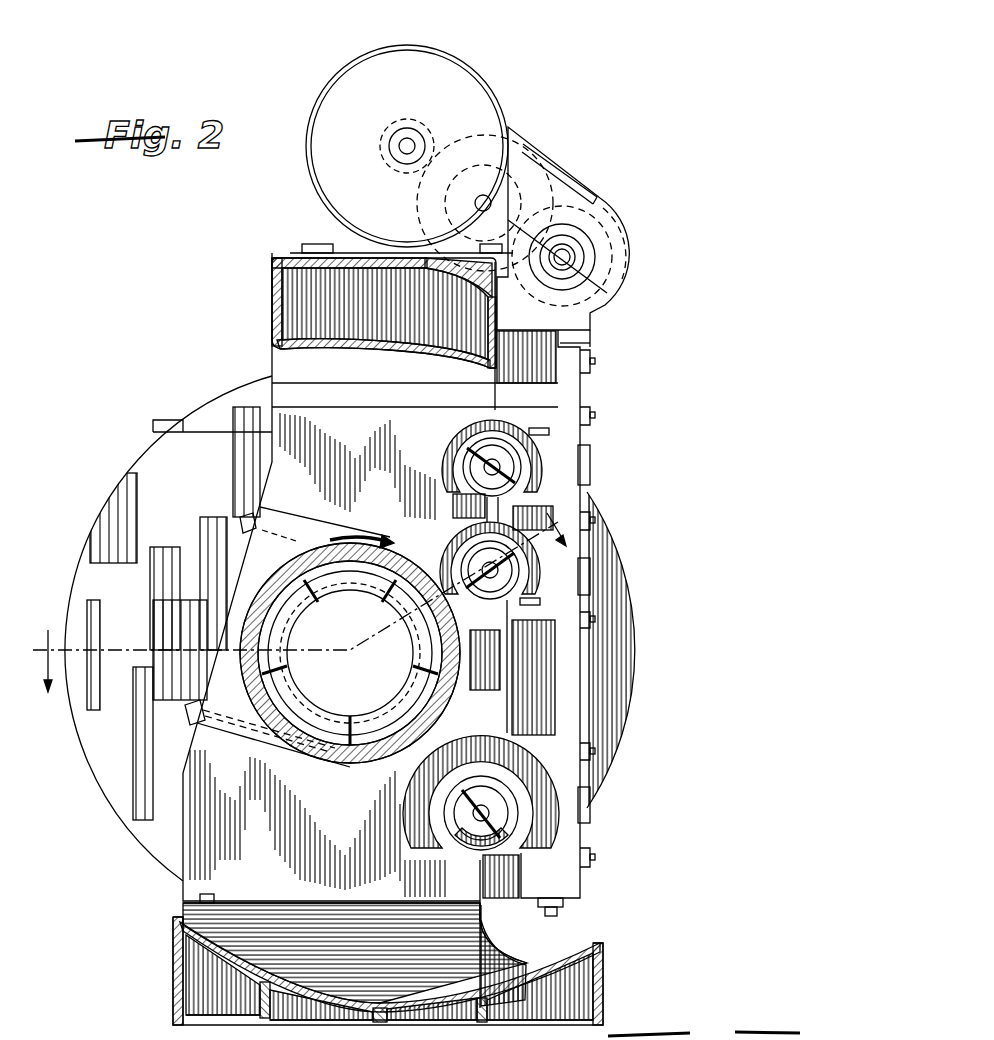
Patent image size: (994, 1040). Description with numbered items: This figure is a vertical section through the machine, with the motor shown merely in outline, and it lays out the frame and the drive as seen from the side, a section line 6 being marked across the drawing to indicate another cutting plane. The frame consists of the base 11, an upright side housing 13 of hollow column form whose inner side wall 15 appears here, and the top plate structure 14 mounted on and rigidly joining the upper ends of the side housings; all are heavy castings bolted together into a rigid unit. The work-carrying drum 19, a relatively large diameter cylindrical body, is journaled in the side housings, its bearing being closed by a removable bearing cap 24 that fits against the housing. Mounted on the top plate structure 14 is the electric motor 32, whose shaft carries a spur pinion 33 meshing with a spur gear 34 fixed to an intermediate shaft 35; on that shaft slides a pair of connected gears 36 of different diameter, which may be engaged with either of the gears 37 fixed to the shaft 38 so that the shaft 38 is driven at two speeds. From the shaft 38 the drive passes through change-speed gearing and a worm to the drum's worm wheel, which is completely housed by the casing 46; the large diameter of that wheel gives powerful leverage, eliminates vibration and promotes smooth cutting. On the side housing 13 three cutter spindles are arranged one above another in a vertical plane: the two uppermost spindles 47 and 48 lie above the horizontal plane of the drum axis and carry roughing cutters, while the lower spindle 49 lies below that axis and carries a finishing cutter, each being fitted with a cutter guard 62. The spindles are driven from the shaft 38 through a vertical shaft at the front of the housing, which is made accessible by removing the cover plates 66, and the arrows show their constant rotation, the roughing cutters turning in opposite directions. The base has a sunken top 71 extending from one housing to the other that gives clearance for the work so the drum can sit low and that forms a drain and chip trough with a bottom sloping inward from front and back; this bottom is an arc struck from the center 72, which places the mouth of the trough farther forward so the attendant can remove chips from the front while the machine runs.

The section line 6- 6 is at (298, 597).
The base 11 is at (175, 965).
The side housing 13 is at (202, 807).
The top plate structure 14 is at (272, 290).
The inner side wall 15 is at (398, 423).
The drum 19 is at (262, 588).
The bearing cap 24 is at (220, 676).
The electric motor 32 is at (478, 103).
The spur pinion 33 is at (430, 133).
The spur gear 34 is at (417, 187).
The intermediate shaft 35 is at (462, 178).
The pair of connected gears 36 is at (436, 210).
The gears 37 is at (620, 240).
The shaft 38 is at (570, 257).
The casing 46 is at (147, 463).
The spindle 47 is at (503, 458).
The spindle 48 is at (498, 552).
The lower spindle 49 is at (490, 815).
The cutter guard 62 is at (453, 443).
The cover plates 66 is at (578, 463).
The sunken top 71 is at (523, 967).
The center 72 is at (412, 652).